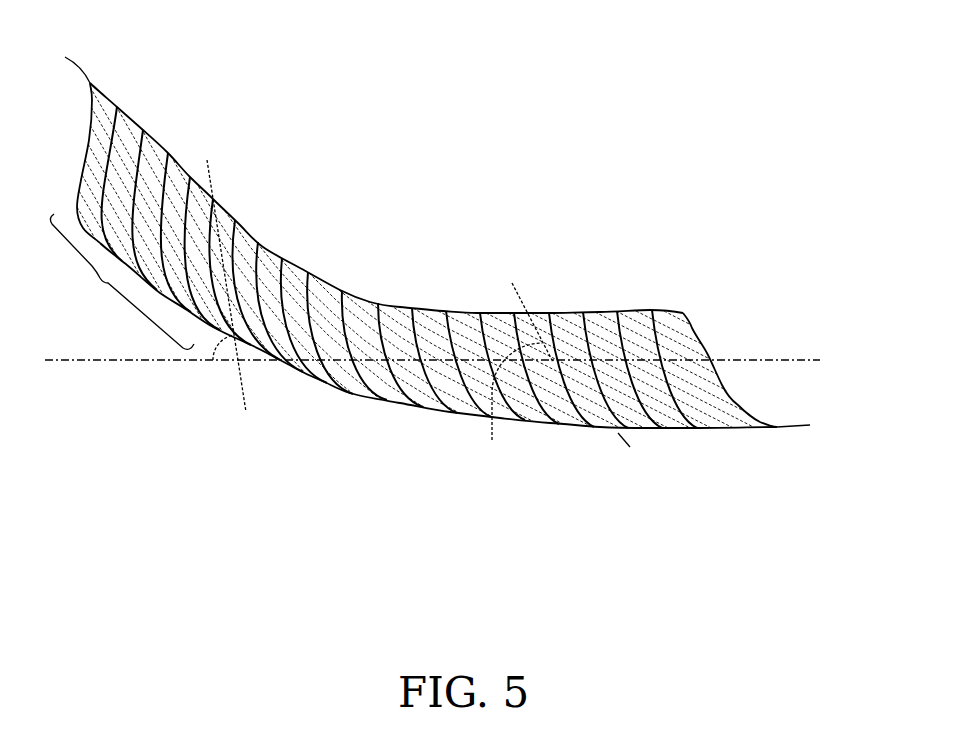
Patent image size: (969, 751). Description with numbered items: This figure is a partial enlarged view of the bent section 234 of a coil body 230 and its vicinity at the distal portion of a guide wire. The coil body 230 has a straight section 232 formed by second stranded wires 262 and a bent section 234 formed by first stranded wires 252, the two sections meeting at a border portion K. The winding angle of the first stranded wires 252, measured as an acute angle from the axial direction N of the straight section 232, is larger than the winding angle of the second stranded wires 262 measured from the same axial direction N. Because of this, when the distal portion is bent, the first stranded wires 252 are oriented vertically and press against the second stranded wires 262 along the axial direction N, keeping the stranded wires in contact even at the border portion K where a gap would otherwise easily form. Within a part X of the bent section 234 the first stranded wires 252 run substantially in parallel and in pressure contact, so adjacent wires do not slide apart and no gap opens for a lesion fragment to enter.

The coil body 230 is at (442, 186).
The straight section 232 is at (744, 280).
The bent section 234 is at (359, 273).
The first stranded wires 252 is at (294, 262).
The second stranded wires 262 is at (607, 430).
The axial direction N is at (444, 360).
The part X is at (122, 281).
The border portion K is at (358, 396).